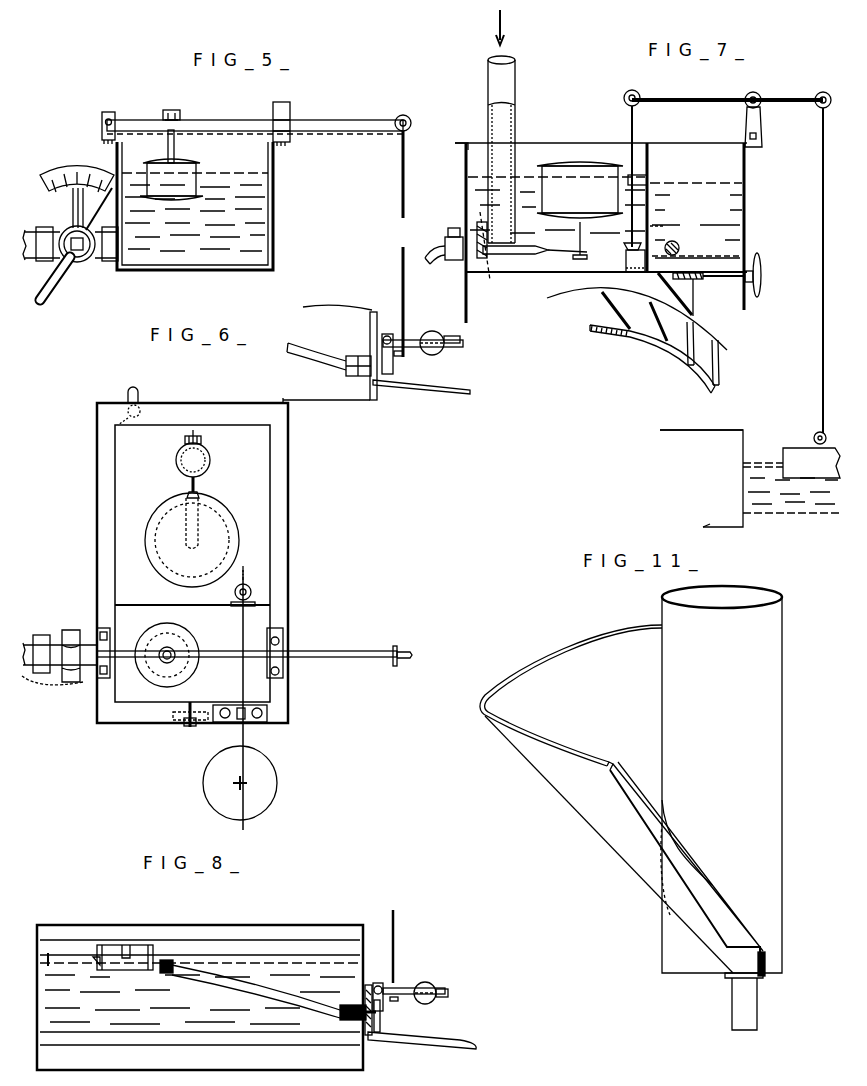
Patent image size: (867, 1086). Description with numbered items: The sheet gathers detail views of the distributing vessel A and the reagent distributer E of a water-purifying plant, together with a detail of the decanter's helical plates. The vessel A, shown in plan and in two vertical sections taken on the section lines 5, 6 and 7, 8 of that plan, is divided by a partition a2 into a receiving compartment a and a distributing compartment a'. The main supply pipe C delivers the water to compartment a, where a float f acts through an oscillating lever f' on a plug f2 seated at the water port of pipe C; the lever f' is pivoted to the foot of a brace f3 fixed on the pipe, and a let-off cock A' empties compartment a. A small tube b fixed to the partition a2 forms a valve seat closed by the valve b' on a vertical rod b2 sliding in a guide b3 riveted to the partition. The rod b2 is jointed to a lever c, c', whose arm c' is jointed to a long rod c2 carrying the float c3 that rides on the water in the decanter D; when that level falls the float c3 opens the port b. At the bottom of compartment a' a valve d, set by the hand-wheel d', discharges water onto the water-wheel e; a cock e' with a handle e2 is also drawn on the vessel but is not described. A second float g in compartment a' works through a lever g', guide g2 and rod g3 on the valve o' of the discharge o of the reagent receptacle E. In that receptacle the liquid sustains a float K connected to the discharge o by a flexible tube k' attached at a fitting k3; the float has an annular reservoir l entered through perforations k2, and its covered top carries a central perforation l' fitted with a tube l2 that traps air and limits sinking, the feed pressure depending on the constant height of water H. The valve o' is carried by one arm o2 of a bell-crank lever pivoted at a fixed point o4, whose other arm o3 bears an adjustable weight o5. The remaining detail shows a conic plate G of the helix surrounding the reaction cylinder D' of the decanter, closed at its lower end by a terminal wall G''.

In FIG. 5, the distributing vessel A is at (202, 206).
In FIG. 7, the distributing vessel A is at (600, 233).
In FIG. 6, the distributing vessel A is at (199, 563).
In FIG. 7, the let-off cock A' is at (444, 283).
In FIG. 6, the let-off cock A' is at (136, 400).
In FIG. 7, the first compartment a is at (515, 139).
In FIG. 6, the first compartment a is at (148, 484).
In FIG. 7, the second compartment (distributer) a' is at (696, 248).
In FIG. 6, the second compartment (distributer) a' is at (210, 620).
In FIG. 7, the partition a2 is at (664, 228).
In FIG. 6, the partition a2 is at (150, 607).
In FIG. 7, the small tube b is at (624, 261).
In FIG. 6, the small tube b is at (233, 595).
In FIG. 7, the valve b' is at (624, 241).
In FIG. 6, the valve b' is at (260, 579).
In FIG. 7, the vertical rod b2 is at (633, 135).
In FIG. 7, the guide b3 is at (642, 175).
In FIG. 7, the lever c is at (727, 113).
In FIG. 6, the lever c is at (250, 698).
In FIG. 7, the lever arm c' is at (790, 90).
In FIG. 6, the lever arm c' is at (253, 742).
In FIG. 7, the long rod c2 is at (827, 268).
In FIG. 7, the float c3 is at (811, 463).
In FIG. 6, the float c3 is at (249, 783).
In FIG. 6, the main supply pipe C is at (210, 447).
In FIG. 7, the valve d is at (725, 284).
In FIG. 6, the hand-wheel d' is at (217, 729).
In FIG. 7, the decanter D is at (750, 480).
In FIG. 7, the concentric cylinder D' is at (701, 420).
In FIG. 11, the concentric cylinder D' is at (722, 808).
In FIG. 7, the water-wheel e is at (637, 333).
In FIG. 5, the cock e' is at (70, 233).
In FIG. 7, the cock e' is at (680, 245).
In FIG. 6, the cock e' is at (59, 667).
In FIG. 5, the cock handle e2 is at (80, 262).
In FIG. 6, the cock handle e2 is at (74, 685).
In FIG. 5, the reagent distributer E is at (330, 354).
In FIG. 8, the reagent distributer E is at (200, 997).
In FIG. 7, the float f is at (580, 210).
In FIG. 6, the float f is at (192, 540).
In FIG. 7, the oscillating lever f' is at (529, 226).
In FIG. 6, the oscillating lever f' is at (210, 483).
In FIG. 7, the plug f2 is at (489, 252).
In FIG. 6, the brace f3 is at (202, 438).
In FIG. 5, the float g is at (171, 155).
In FIG. 6, the float g is at (167, 655).
In FIG. 5, the lever g' is at (252, 121).
In FIG. 6, the lever g' is at (254, 653).
In FIG. 5, the guide g2 is at (291, 110).
In FIG. 6, the guide g2 is at (290, 650).
In FIG. 5, the rod g3 is at (409, 236).
In FIG. 8, the rod g3 is at (403, 946).
In FIG. 7, the conic plates G is at (491, 149).
In FIG. 11, the conic plates G is at (621, 799).
In FIG. 11, the spout block G'' is at (782, 964).
In FIG. 8, the height of water H is at (45, 958).
In FIG. 8, the float K is at (127, 946).
In FIG. 8, the flexible tube k' is at (262, 991).
In FIG. 8, the perforations k2 is at (91, 976).
In FIG. 8, the fitting k3 is at (163, 974).
In FIG. 8, the annular reservoir l is at (103, 940).
In FIG. 8, the perforation l' is at (136, 939).
In FIG. 8, the tube l2 is at (124, 987).
In FIG. 8, the discharge o is at (353, 1026).
In FIG. 5, the valve o' is at (340, 355).
In FIG. 8, the valve o' is at (397, 1016).
In FIG. 8, the bell-crank lever arm o2 is at (375, 1042).
In FIG. 8, the bell-crank lever arm o3 is at (420, 982).
In FIG. 5, the fixed pivot point o4 is at (398, 362).
In FIG. 8, the fixed pivot point o4 is at (407, 986).
In FIG. 8, the weight o5 is at (446, 989).
In FIG. 6, the section line 5—6 5 is at (97, 653).
In FIG. 6, the section line 5— 6 is at (400, 654).
In FIG. 6, the section line 7—8 7 is at (123, 403).
In FIG. 6, the section line 7— 8 is at (243, 790).